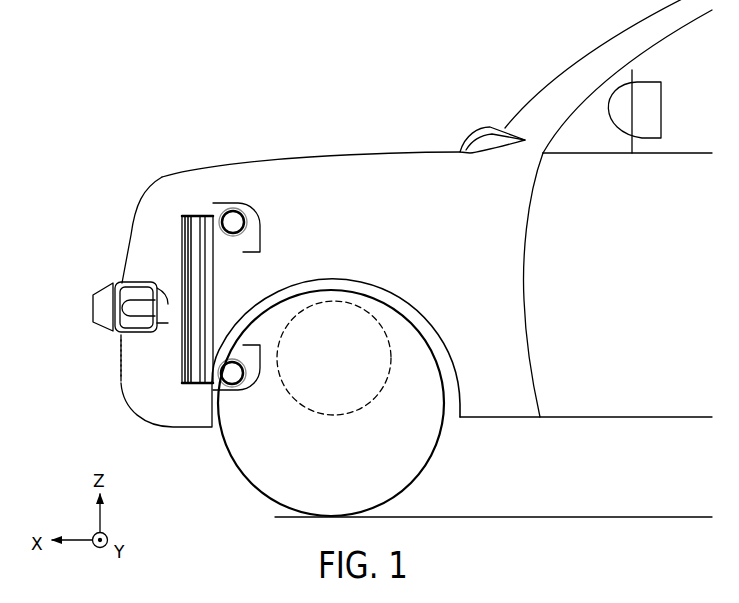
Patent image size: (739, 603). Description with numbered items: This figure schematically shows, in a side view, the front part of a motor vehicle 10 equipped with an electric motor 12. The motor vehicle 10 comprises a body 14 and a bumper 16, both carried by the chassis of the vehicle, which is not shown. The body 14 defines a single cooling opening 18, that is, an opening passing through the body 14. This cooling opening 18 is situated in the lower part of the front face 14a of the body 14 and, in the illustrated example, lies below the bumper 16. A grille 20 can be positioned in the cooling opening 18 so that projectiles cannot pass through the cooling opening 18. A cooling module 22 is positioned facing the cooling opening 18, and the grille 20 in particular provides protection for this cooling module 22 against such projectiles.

The motor vehicle 10 is at (175, 80).
The electric motor 12 is at (290, 396).
The body 14 is at (145, 188).
The front face 14a is at (131, 222).
The bumper 16 is at (100, 298).
The cooling opening 18 is at (113, 368).
The grille 20 is at (119, 355).
The cooling module 22 is at (153, 383).